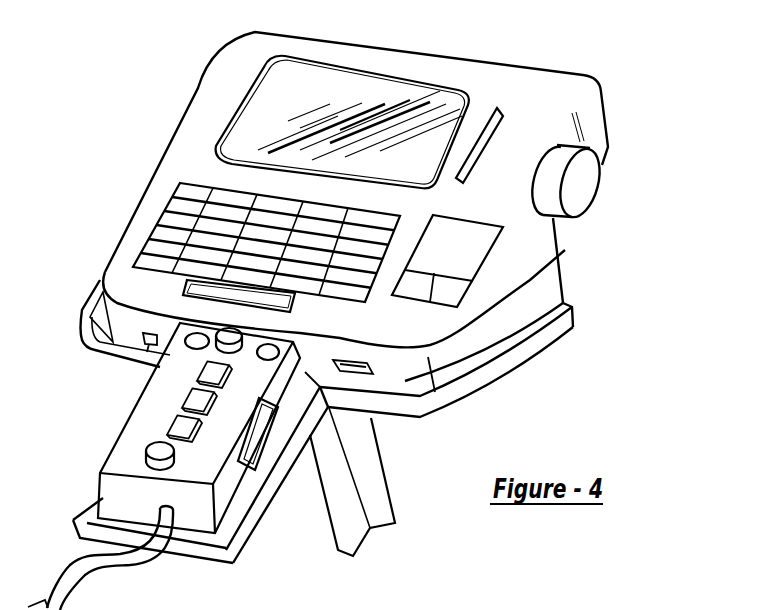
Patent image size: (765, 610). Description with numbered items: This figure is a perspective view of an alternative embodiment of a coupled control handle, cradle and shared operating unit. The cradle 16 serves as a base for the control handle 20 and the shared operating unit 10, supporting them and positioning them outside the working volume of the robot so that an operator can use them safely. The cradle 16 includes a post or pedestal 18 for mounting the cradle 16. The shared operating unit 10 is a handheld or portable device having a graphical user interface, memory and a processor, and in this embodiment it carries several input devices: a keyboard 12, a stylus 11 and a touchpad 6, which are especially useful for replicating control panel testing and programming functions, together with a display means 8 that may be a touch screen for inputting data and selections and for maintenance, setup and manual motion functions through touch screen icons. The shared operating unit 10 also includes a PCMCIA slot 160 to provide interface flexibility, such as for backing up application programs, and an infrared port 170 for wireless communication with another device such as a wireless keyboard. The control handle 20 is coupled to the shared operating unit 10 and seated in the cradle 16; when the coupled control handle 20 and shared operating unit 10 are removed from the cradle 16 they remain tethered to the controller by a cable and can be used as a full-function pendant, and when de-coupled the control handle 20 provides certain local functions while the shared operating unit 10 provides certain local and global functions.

The shared operating unit 10 is at (407, 47).
The display means 8 is at (245, 119).
The stylus 11 is at (487, 137).
The keyboard 12 is at (187, 227).
The touchpad 6 is at (460, 247).
The infrared port 170 is at (147, 346).
The PCMCIA slot 160 is at (370, 367).
The control handle 20 is at (117, 428).
The cradle 16 is at (280, 480).
The pedestal 18 is at (365, 467).